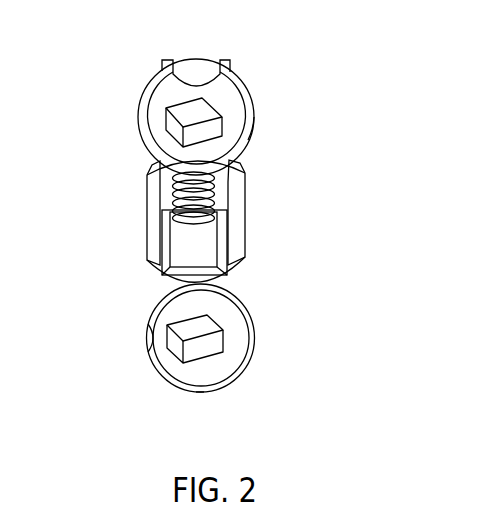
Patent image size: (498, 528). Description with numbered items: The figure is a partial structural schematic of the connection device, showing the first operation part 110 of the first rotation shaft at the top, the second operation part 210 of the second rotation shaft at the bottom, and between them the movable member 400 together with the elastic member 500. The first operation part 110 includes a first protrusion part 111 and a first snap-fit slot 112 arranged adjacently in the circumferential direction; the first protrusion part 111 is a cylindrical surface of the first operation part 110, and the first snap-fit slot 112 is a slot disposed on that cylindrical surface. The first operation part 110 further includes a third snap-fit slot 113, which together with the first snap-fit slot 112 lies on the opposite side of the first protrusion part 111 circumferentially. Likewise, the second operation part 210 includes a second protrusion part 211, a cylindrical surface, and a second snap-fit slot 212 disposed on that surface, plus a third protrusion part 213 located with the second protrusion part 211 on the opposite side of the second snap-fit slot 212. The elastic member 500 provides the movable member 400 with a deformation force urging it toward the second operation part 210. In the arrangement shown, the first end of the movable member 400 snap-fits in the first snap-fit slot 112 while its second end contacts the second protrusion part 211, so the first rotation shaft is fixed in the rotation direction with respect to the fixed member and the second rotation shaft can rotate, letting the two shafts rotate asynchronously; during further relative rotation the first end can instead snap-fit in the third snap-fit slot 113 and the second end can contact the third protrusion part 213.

The first operation part 110 is at (234, 118).
The first protrusion part 111 is at (254, 131).
The first snap-fit slot 112 is at (234, 172).
The third snap-fit slot 113 is at (192, 74).
The movable member 400 is at (236, 232).
The elastic member 500 is at (158, 198).
The second operation part 210 is at (236, 344).
The second protrusion part 211 is at (232, 287).
The second snap-fit slot 212 is at (155, 338).
The third protrusion part 213 is at (199, 393).